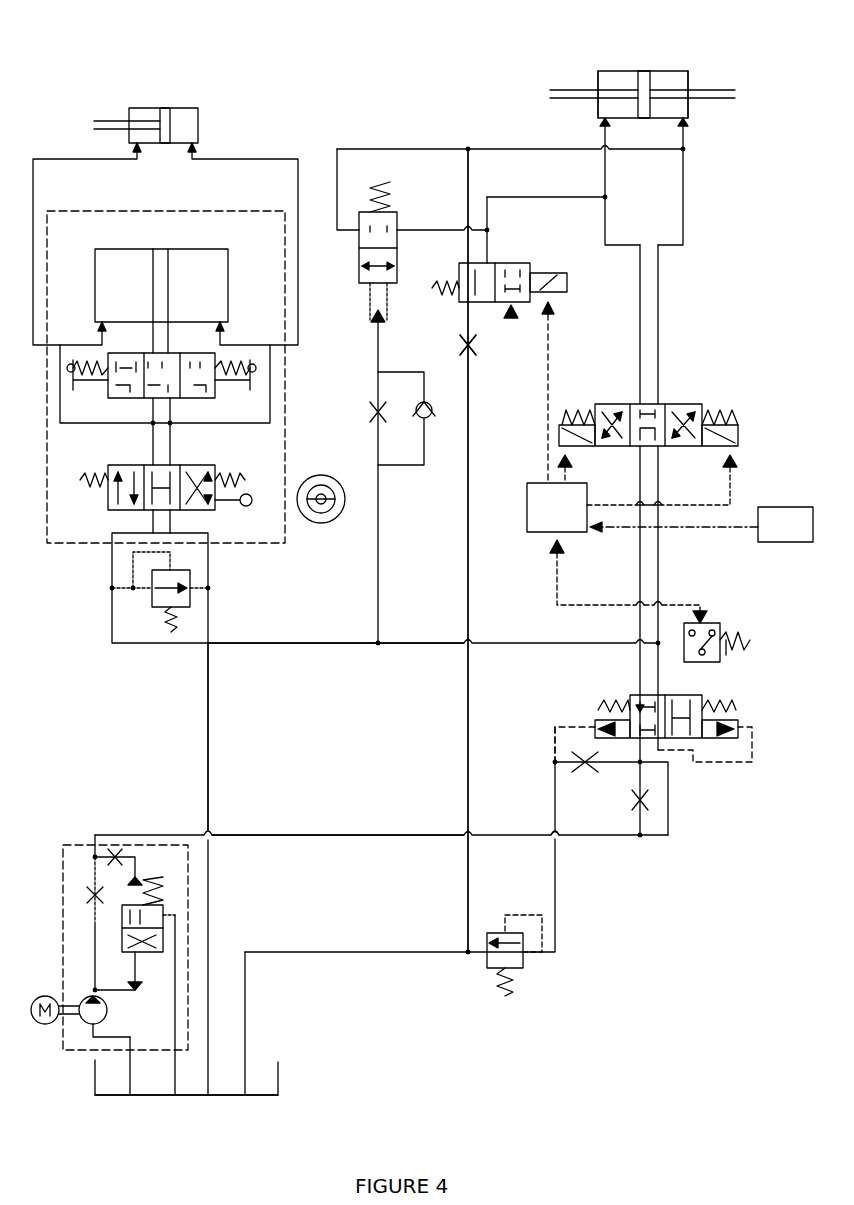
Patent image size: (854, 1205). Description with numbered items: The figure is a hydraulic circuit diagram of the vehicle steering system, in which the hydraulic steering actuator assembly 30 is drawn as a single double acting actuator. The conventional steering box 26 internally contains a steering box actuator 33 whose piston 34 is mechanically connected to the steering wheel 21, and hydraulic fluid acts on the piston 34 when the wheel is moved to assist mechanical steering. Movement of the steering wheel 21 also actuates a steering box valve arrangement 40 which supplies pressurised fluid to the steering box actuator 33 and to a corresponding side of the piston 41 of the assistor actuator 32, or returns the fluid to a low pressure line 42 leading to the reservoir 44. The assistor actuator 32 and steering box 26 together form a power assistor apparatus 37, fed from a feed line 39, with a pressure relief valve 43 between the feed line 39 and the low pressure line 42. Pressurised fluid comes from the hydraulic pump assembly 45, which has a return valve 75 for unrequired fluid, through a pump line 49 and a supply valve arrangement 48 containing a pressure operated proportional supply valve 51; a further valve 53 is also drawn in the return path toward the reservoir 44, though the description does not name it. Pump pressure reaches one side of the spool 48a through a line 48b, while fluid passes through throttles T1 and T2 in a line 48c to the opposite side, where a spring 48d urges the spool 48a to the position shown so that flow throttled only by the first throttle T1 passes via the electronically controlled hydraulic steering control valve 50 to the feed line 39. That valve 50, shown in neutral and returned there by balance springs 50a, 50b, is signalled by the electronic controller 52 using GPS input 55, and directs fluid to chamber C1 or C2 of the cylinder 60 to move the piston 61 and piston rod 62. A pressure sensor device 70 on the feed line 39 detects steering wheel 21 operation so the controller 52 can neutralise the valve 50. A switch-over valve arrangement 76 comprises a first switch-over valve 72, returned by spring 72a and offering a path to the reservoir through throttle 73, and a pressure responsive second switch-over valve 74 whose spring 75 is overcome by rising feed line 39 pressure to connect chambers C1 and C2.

The steering wheel 21 is at (322, 523).
The steering box 26 is at (302, 433).
The hydraulic steering actuator assembly 30 is at (685, 52).
The assistor actuator 32 is at (215, 92).
The steering box actuator 33 is at (233, 245).
The piston 34 is at (157, 258).
The power assistor apparatus 37 is at (298, 550).
The feed line 39 is at (318, 645).
The steering box valve arrangement 40 is at (90, 434).
The piston 41 is at (163, 108).
The low pressure line 42 is at (210, 728).
The pressure relief valve 43 is at (150, 590).
The reservoir 44 is at (300, 1085).
The hydraulic pump assembly 45 is at (55, 890).
The supply valve arrangement 48 is at (690, 780).
The spool 48a is at (655, 708).
The line 48b is at (712, 764).
The line 48c is at (555, 745).
The spring 48d is at (600, 708).
The pump line 49 is at (393, 840).
The electronically controlled hydraulic steering control valve 50 is at (683, 385).
The balance spring 50a is at (580, 415).
The balance spring 50b is at (720, 415).
The proportional supply valve 51 is at (700, 705).
The electronic controller 52 is at (557, 507).
The check valve 53 is at (540, 985).
The GPS input 55 is at (701, 524).
The cylinder 60 is at (690, 118).
The piston 61 is at (644, 70).
The piston rod 62 is at (563, 88).
The pressure sensor device 70 is at (705, 605).
The first switch-over valve 72 is at (512, 320).
The spring 72a is at (440, 285).
The throttle 73 is at (472, 347).
The second switch-over valve 74 is at (390, 212).
The spring 75 is at (150, 955).
The switch-over valve arrangement 76 is at (434, 512).
The chamber C1 is at (618, 82).
The chamber C2 is at (690, 74).
The first throttle T1 is at (642, 845).
The second throttle T2 is at (576, 848).